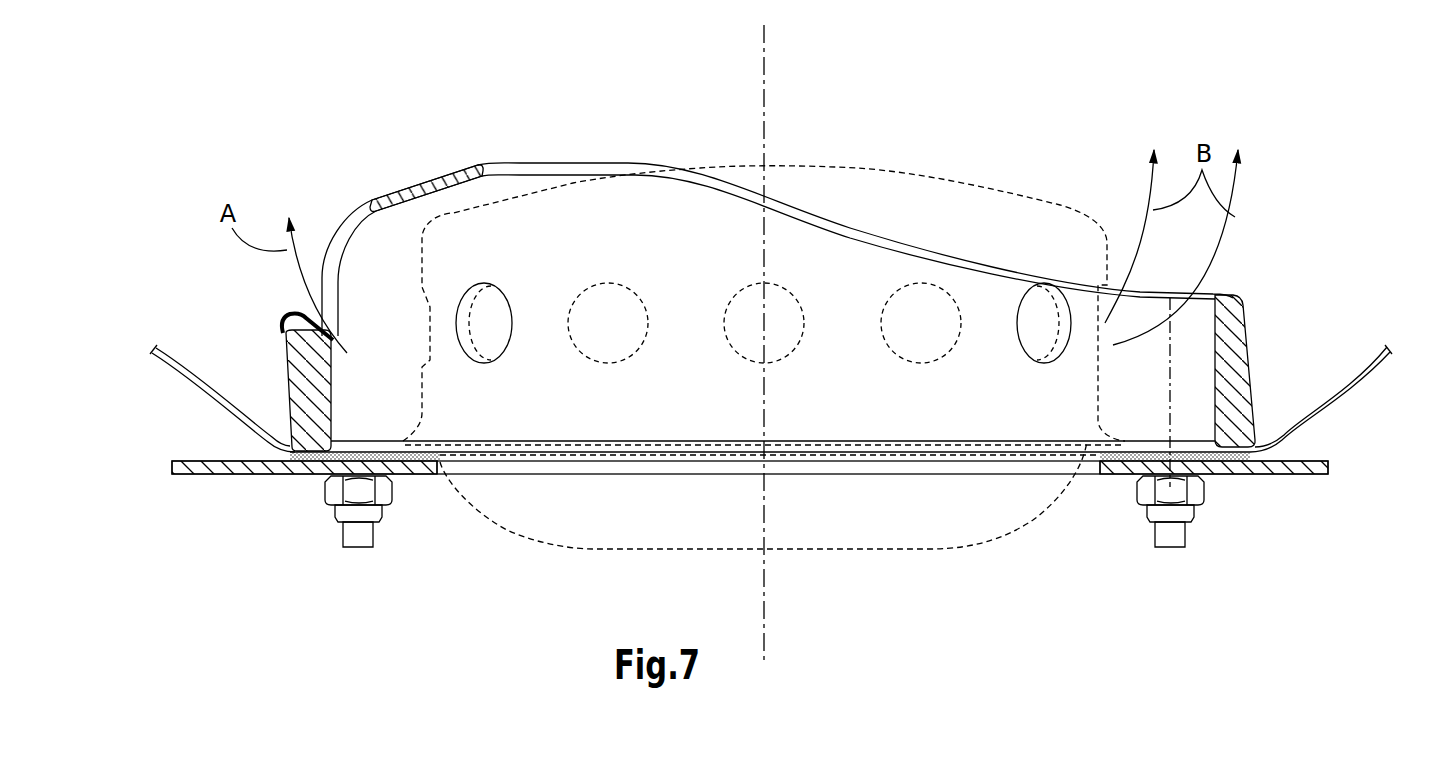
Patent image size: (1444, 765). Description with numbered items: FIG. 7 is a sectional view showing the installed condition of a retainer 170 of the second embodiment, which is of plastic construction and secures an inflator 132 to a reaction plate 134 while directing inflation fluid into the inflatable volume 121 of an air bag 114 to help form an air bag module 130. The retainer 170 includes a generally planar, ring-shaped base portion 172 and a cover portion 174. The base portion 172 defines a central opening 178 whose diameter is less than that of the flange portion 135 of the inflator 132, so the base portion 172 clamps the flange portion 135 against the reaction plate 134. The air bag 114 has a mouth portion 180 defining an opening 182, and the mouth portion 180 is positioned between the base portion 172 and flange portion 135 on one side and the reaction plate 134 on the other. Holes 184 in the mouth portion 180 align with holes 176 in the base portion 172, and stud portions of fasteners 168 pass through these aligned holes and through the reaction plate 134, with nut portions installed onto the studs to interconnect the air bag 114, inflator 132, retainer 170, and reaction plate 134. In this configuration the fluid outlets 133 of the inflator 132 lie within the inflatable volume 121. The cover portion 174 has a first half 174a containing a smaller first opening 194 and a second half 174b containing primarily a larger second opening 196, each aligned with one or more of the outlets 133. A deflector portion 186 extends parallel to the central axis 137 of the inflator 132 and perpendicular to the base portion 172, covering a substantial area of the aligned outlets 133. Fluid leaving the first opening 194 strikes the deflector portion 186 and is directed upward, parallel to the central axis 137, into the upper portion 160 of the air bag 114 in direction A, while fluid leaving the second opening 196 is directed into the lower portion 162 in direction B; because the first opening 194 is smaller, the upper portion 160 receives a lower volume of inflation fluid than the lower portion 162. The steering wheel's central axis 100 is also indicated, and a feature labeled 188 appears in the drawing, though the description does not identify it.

The central axis 100 is at (768, 62).
The air bag 114 is at (205, 406).
The inflatable volume 121 is at (585, 101).
The air bag module 130 is at (1366, 206).
The inflator 132 is at (875, 168).
The fluid outlets 133 is at (928, 318).
The reaction plate 134 is at (210, 472).
The flange portion 135 is at (440, 457).
The central axis 137 is at (755, 115).
The upper portion 160 is at (222, 411).
The lower portion 162 is at (1353, 393).
The fasteners 168 is at (359, 540).
The retainer 170 is at (1252, 303).
The base portion 172 is at (1257, 441).
The cover portion 174 is at (1238, 290).
The first half 174a is at (397, 186).
The second half 174b is at (898, 238).
The holes 176 is at (337, 468).
The central opening 178 is at (1030, 478).
The mouth portion 180 is at (1197, 468).
The opening 182 is at (1122, 457).
The holes 184 is at (379, 446).
The deflector portion 186 is at (284, 377).
The cover section 188 is at (429, 170).
The first opening 194 is at (338, 276).
The second opening 196 is at (1013, 277).